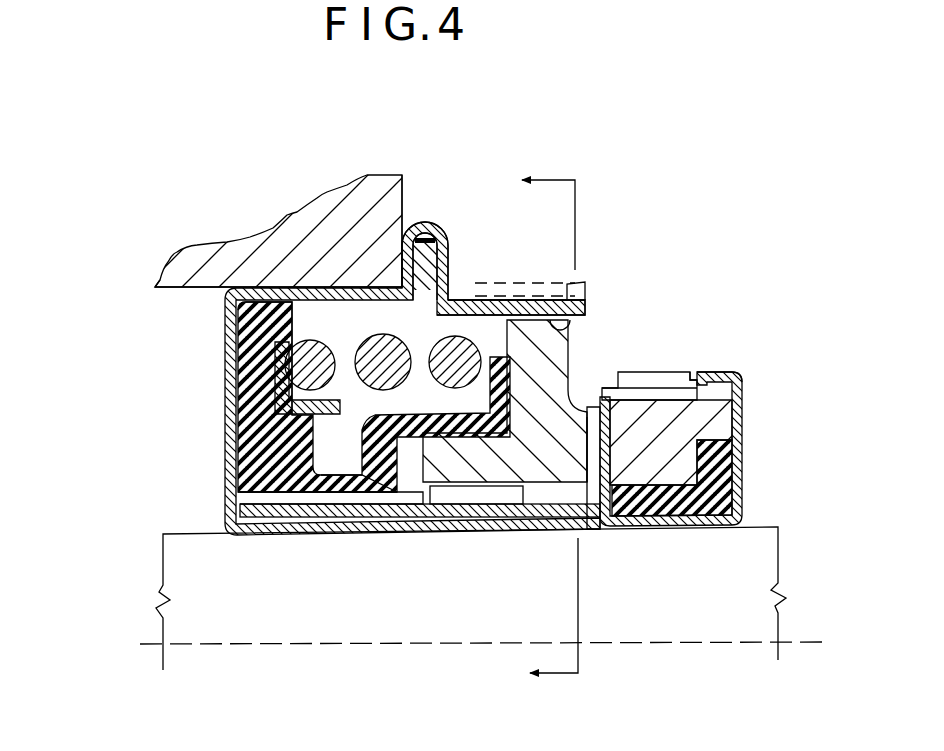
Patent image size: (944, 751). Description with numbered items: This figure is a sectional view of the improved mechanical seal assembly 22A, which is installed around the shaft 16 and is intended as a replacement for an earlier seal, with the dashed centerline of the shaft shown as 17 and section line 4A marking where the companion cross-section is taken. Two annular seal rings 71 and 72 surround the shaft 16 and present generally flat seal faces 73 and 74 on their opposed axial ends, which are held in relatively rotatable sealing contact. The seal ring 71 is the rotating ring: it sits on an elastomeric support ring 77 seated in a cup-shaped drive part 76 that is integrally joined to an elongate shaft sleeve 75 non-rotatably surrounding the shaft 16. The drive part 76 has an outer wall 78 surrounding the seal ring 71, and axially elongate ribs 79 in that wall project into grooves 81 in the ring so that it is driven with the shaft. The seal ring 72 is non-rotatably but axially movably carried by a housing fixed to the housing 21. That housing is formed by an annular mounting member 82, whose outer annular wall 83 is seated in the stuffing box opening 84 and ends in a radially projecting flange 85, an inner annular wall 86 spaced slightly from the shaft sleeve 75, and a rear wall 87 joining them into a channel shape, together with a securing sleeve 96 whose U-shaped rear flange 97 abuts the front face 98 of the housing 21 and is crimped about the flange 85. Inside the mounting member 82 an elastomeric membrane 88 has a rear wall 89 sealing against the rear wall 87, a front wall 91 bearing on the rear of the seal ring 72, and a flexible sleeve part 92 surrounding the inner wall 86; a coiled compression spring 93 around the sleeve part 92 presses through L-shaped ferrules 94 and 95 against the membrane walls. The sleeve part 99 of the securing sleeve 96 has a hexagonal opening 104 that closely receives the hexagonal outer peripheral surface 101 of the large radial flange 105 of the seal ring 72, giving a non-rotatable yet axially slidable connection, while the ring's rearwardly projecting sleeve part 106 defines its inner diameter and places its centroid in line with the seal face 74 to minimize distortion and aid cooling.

The shaft 16 is at (185, 577).
The axis centerline 17 is at (298, 655).
The housing 21 is at (333, 232).
The mechanical seal assembly 22A is at (585, 232).
The seal ring 71 is at (652, 500).
The seal ring 72 is at (533, 487).
The seal face 73 is at (588, 500).
The seal face 74 is at (657, 392).
The shaft sleeve 75 is at (517, 530).
The drive part 76 is at (742, 400).
The elastomeric support ring 77 is at (737, 470).
The outer wall 78 is at (727, 372).
The ribs 79 is at (690, 372).
The grooves 81 is at (607, 397).
The mounting member 82 is at (222, 418).
The outer annular wall 83 is at (290, 292).
The stuffing box opening 84 is at (160, 290).
The annular flange 85 is at (455, 300).
The inner annular wall 86 is at (322, 498).
The rear wall 87 is at (233, 365).
The membrane 88 is at (378, 497).
The rear wall 89 is at (240, 340).
The front wall 91 is at (505, 345).
The sleeve part 92 is at (300, 533).
The coiled compression spring 93 is at (383, 363).
The ferrule 94 is at (286, 350).
The ferrule 95 is at (453, 360).
The securing sleeve 96 is at (575, 287).
The annular flange 97 is at (444, 248).
The front face 98 is at (403, 183).
The sleeve part 99 is at (523, 313).
The outer peripheral surface 101 is at (534, 318).
The axial opening 104 is at (560, 335).
The annular flange 105 is at (605, 395).
The sleeve part 106 is at (437, 535).
The section line 4A is at (578, 427).